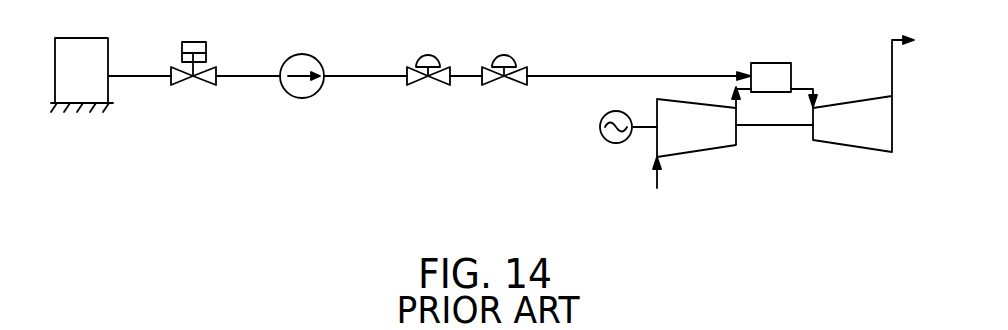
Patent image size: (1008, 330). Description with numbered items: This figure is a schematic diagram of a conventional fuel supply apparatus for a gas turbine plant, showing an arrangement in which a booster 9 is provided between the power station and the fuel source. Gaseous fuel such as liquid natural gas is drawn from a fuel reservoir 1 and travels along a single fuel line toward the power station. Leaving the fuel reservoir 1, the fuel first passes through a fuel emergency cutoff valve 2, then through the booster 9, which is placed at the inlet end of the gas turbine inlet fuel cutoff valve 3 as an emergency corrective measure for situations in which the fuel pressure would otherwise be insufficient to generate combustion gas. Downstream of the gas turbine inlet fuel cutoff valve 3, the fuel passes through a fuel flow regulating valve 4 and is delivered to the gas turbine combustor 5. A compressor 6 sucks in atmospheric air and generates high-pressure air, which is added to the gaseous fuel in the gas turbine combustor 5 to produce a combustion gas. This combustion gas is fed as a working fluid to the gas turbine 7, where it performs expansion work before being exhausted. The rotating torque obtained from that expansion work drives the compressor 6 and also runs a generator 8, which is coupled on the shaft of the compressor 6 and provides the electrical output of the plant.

The fuel reservoir 1 is at (82, 114).
The fuel emergency cutoff valve 2 is at (196, 85).
The gas turbine inlet fuel cutoff valve 3 is at (440, 87).
The fuel flow regulating valve 4 is at (515, 87).
The gas turbine combustor 5 is at (780, 62).
The compressor 6 is at (707, 150).
The gas turbine 7 is at (842, 147).
The generator 8 is at (608, 143).
The booster 9 is at (322, 90).